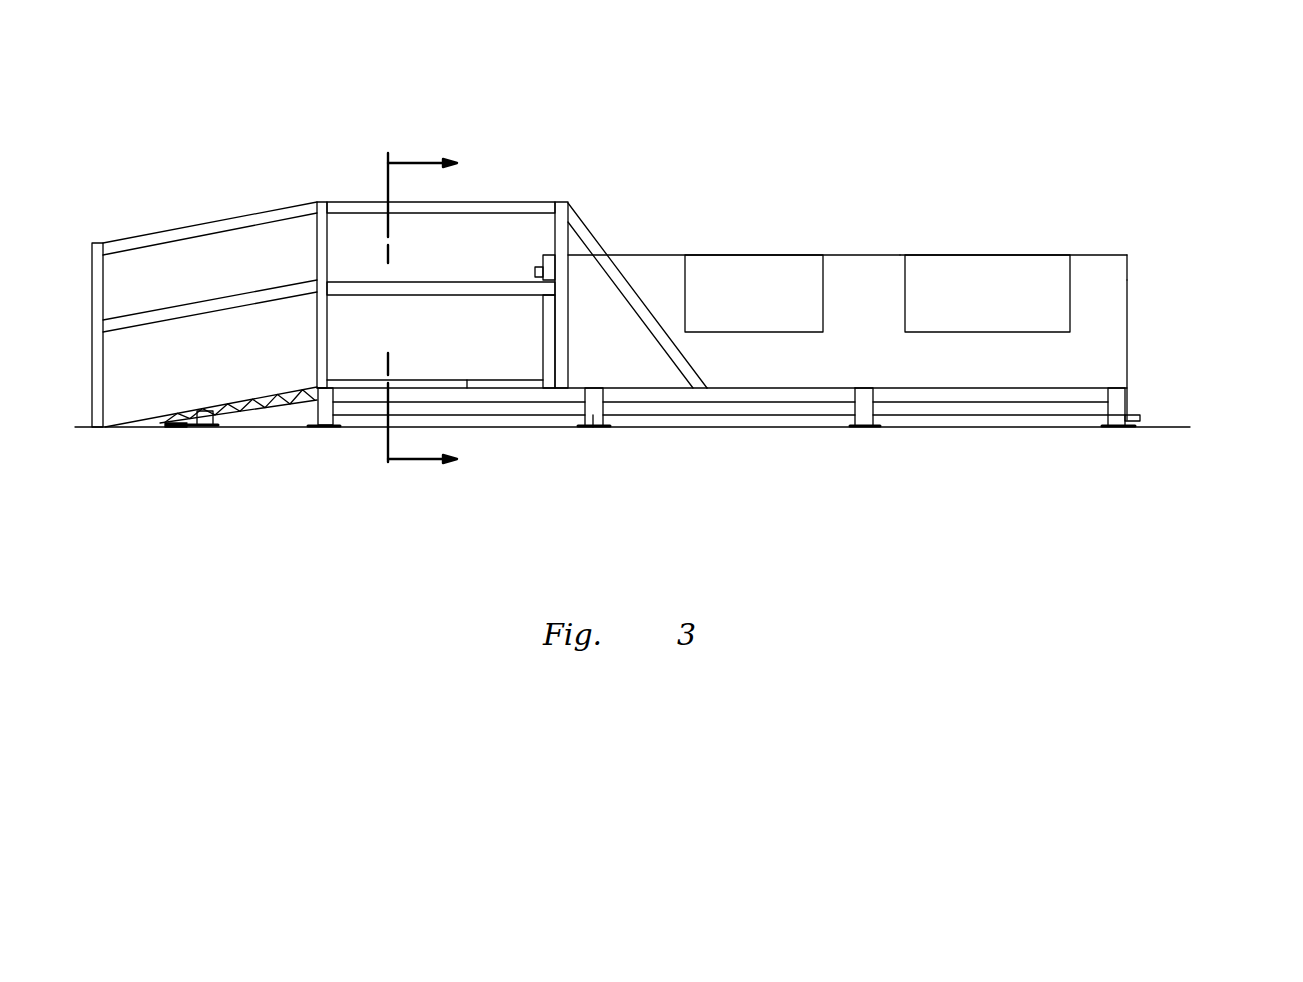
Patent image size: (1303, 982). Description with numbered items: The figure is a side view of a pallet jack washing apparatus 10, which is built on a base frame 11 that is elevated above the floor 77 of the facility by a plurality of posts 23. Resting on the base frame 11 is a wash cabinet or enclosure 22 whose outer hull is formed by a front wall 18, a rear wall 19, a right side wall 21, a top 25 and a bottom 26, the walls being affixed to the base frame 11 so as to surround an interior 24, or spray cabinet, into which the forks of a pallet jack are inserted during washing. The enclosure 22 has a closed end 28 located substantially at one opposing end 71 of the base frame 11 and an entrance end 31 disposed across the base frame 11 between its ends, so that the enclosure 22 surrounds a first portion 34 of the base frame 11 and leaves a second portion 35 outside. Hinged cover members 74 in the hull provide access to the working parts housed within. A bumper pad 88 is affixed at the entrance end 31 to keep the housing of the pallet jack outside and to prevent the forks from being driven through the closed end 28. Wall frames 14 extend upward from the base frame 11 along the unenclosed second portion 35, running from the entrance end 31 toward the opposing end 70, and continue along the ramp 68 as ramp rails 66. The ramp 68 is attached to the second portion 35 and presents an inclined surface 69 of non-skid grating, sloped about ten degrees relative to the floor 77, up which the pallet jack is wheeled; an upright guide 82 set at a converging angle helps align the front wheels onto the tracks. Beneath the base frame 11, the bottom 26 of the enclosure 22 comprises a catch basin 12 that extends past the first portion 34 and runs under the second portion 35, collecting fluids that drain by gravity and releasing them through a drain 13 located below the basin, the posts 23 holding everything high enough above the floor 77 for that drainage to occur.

The pallet jack washing apparatus 10 is at (377, 82).
The base frame 11 is at (1083, 395).
The catch basin 12 is at (675, 420).
The drain 13 is at (1138, 422).
The wall frame 14 is at (367, 202).
The front wall 18 is at (543, 345).
The rear wall 19 is at (1128, 290).
The right side wall 21 is at (647, 263).
The rear wall 22 is at (1098, 267).
The posts 23 is at (323, 415).
The interior 24 is at (866, 290).
The top 25 is at (843, 250).
The bottom 26 is at (950, 422).
The closed end 28 is at (1128, 268).
The entrance end 31 is at (543, 363).
The first portion 34 is at (745, 390).
The second portion 35 is at (458, 390).
The ramp rail 66 is at (128, 240).
The ramp 68 is at (148, 418).
The surface 69 is at (218, 397).
The opposing end 70 is at (317, 388).
The opposing end 71 is at (1132, 398).
The hinged cover member 74 is at (722, 268).
The floor 77 is at (1168, 422).
The upright guide 82 is at (532, 390).
The bumper pad 88 is at (535, 270).